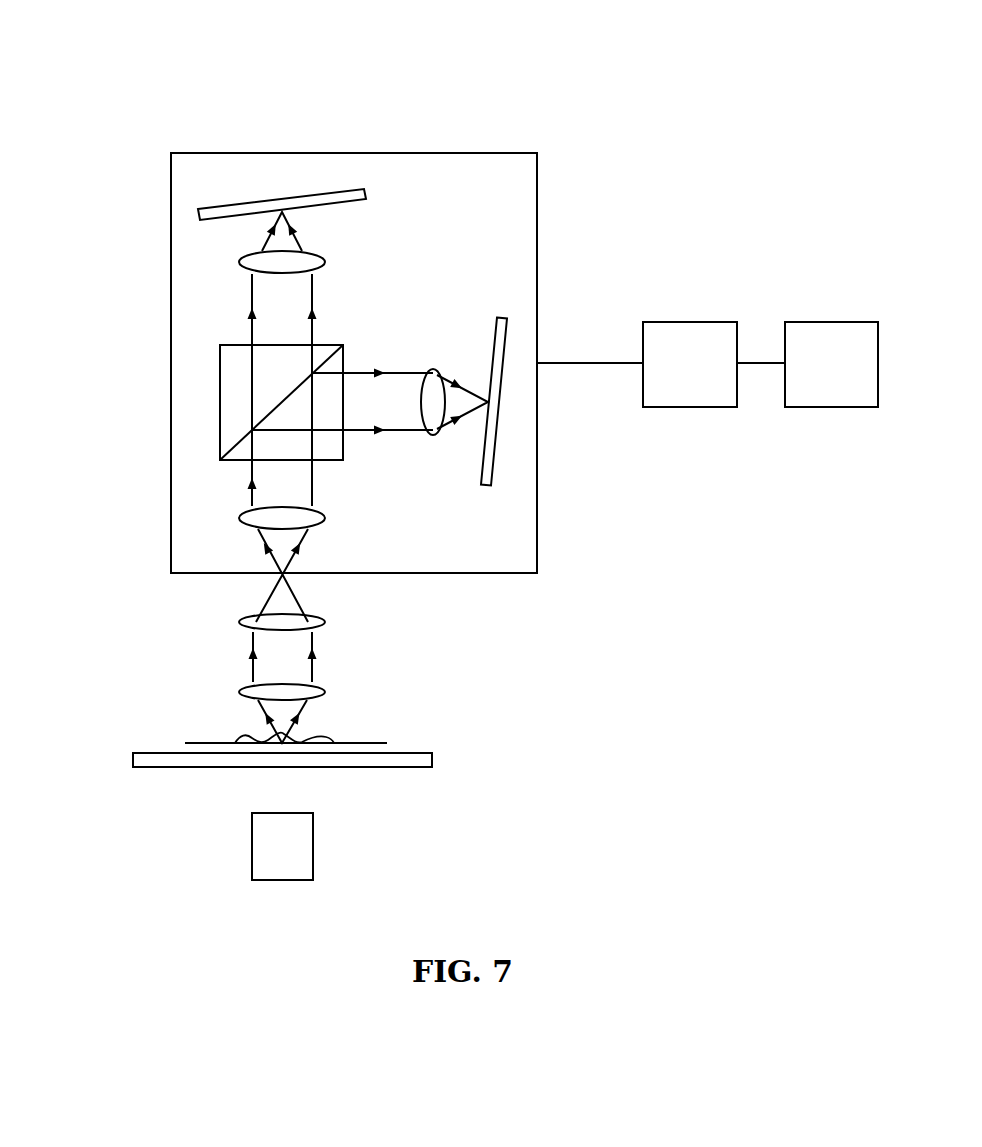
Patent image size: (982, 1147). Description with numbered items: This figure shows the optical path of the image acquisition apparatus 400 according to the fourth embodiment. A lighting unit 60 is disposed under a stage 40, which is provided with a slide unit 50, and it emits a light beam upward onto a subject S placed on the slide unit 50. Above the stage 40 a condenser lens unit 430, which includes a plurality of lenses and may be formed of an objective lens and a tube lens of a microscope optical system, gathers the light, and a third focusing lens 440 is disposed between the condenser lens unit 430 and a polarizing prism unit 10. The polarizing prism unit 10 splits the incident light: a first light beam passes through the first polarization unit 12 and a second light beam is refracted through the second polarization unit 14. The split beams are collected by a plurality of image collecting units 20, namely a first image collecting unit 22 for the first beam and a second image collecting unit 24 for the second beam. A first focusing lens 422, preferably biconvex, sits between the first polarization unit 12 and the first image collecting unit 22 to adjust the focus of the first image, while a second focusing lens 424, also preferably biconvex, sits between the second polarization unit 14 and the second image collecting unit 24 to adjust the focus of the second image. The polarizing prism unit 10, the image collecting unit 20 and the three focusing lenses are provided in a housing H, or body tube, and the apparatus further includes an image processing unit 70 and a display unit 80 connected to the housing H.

The image acquisition apparatus 400 is at (179, 33).
The housing H is at (268, 153).
The image collecting unit 20 is at (502, 80).
The first image collecting unit 22 is at (325, 198).
The second image collecting unit 24 is at (495, 325).
The first focusing lens 422 is at (250, 258).
The polarizing prism unit 10 is at (90, 383).
The first polarization unit 12 is at (220, 383).
The second polarization unit 14 is at (238, 462).
The third focusing lens 440 is at (250, 516).
The second focusing lens 424 is at (433, 428).
The condenser lens unit 430 is at (322, 688).
The subject S is at (238, 742).
The slide unit 50 is at (378, 742).
The stage 40 is at (422, 760).
The lighting unit 60 is at (305, 846).
The image processing unit 70 is at (690, 364).
The display unit 80 is at (831, 364).